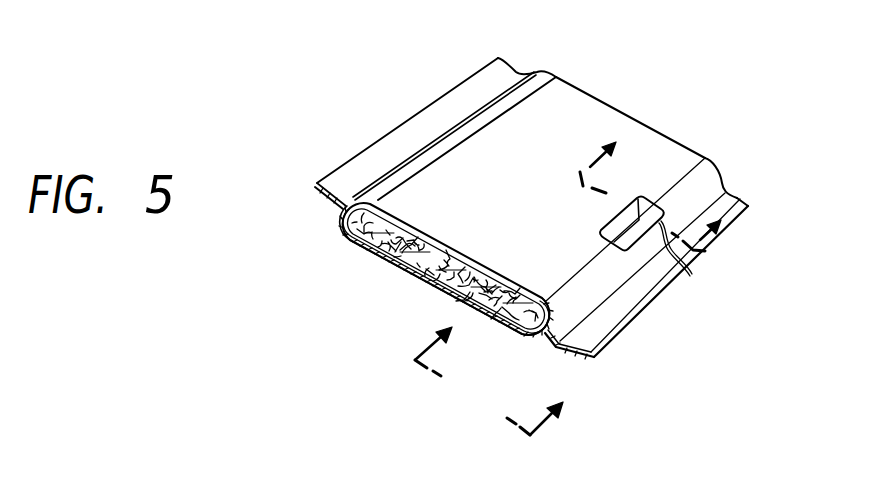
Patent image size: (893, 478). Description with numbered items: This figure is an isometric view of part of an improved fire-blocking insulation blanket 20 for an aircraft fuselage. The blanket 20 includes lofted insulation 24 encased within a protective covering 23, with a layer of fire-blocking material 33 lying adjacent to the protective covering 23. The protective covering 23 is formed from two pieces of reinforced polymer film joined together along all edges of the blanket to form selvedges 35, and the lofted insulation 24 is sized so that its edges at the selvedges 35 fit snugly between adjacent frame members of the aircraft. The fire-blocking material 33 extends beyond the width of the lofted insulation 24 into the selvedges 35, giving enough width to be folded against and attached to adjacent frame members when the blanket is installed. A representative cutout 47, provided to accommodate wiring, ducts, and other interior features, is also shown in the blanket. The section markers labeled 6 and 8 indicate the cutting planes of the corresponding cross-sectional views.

The insulation blanket 20 is at (738, 200).
The protective covering 23 is at (576, 104).
The lofted insulation 24 is at (380, 236).
The fire-blocking material 33 is at (395, 267).
The selvedges 35 is at (370, 166).
The cutout 47 is at (642, 197).
The section line 6- 6 is at (488, 381).
The section line 8- 8 is at (652, 203).